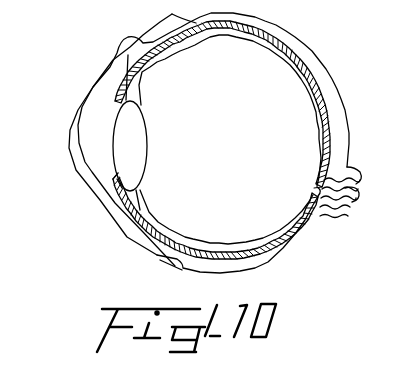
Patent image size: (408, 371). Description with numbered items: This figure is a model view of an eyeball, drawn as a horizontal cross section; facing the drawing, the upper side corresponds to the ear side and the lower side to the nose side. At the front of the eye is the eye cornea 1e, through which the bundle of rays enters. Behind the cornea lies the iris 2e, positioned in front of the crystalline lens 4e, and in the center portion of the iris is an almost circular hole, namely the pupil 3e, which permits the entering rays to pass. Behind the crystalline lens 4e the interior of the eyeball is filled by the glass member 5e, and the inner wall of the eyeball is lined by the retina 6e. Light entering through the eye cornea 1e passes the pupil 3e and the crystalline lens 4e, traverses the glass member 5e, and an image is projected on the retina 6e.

The eye cornea 1e is at (73, 167).
The iris 2e is at (117, 183).
The pupil 3e is at (115, 125).
The crystalline lens 4e is at (138, 125).
The glass member 5e is at (274, 70).
The retina 6e is at (297, 215).